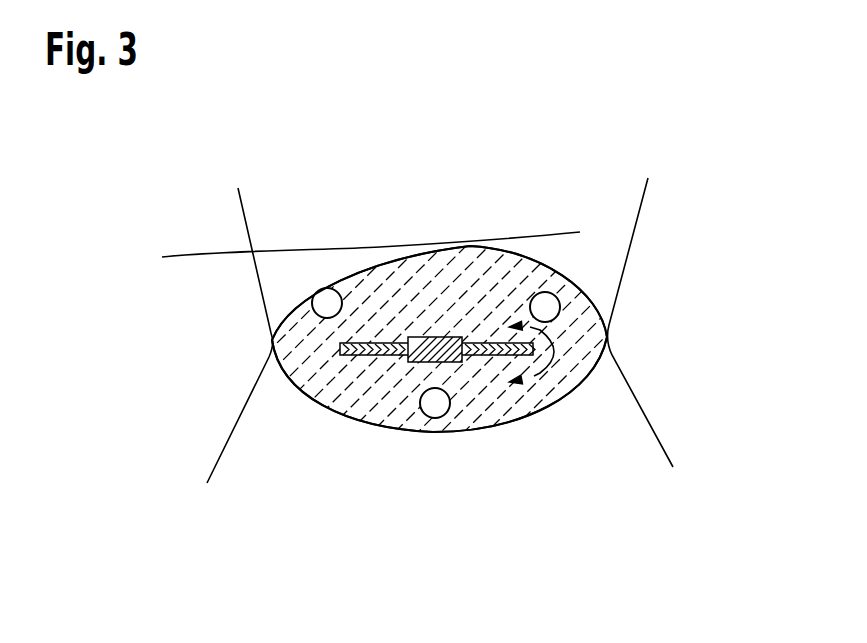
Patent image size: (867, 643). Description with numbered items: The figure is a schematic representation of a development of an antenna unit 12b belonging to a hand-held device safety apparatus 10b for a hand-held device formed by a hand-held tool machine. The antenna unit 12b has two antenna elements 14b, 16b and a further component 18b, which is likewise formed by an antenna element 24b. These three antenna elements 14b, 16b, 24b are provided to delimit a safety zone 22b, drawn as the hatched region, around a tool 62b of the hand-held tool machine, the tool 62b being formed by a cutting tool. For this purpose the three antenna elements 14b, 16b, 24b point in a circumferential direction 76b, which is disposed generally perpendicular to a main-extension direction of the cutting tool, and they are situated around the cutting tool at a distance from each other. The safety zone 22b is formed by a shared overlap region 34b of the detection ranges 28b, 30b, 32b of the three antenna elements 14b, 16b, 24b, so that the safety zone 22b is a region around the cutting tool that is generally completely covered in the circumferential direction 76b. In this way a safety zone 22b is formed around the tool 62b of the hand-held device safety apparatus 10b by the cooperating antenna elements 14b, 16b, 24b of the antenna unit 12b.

The hand-held device safety apparatus 10b is at (397, 497).
The antenna unit 12b is at (439, 227).
The antenna element 14b is at (545, 307).
The antenna element 16b is at (327, 303).
The further component 18b is at (435, 403).
The safety zone 22b is at (580, 353).
The antenna element 24b is at (392, 428).
The detection range 28b is at (620, 406).
The detection range 30b is at (253, 436).
The detection range 32b is at (590, 275).
The shared overlap region 34b is at (399, 280).
The tool 62b is at (455, 357).
The circumferential direction 76b is at (552, 375).